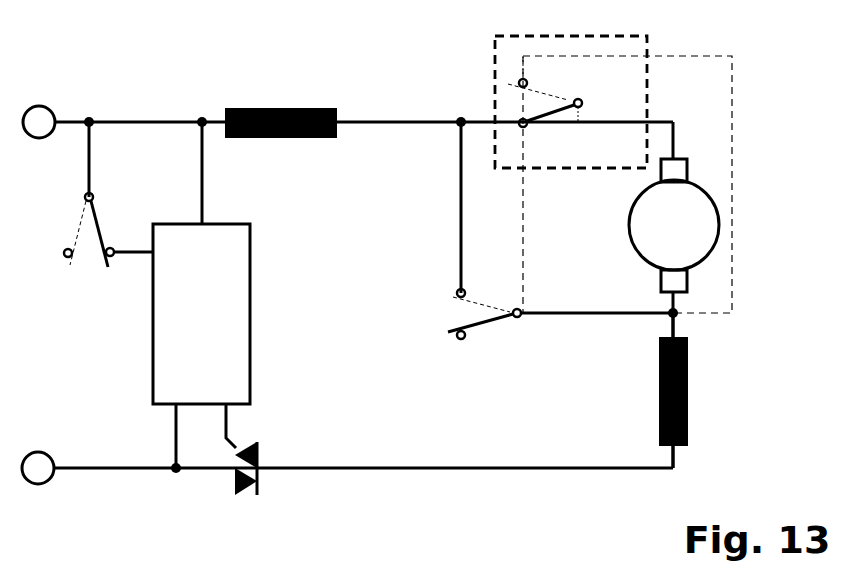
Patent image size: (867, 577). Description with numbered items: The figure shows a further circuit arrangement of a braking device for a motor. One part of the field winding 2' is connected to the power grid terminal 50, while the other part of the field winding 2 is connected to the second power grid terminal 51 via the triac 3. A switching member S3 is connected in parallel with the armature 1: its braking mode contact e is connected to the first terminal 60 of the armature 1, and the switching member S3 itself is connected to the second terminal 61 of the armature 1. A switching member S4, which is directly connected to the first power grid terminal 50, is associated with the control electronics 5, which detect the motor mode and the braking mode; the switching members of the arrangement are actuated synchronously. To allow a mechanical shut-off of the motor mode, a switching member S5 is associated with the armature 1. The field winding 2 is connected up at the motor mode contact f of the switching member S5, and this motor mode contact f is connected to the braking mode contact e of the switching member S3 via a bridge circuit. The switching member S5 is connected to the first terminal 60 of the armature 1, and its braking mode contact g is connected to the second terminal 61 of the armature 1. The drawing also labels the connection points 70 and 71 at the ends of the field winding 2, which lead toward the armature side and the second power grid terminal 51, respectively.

The power grid terminal 50 is at (39, 106).
The second power grid terminal 51 is at (38, 452).
The field winding part 2' is at (281, 95).
The switching member S4 is at (93, 196).
The control electronics 5 is at (153, 315).
The triac 3 is at (248, 495).
The braking mode contact e is at (465, 292).
The switching member S3 is at (517, 318).
The motor mode contact f is at (526, 127).
The switching member S5 is at (582, 101).
The braking mode contact g is at (527, 82).
The armature 1 is at (629, 222).
The first terminal 60 is at (675, 142).
The second terminal 61 is at (670, 300).
The first resistor terminal 70 is at (676, 330).
The field winding part 2 is at (648, 391).
The second resistor terminal 71 is at (676, 462).